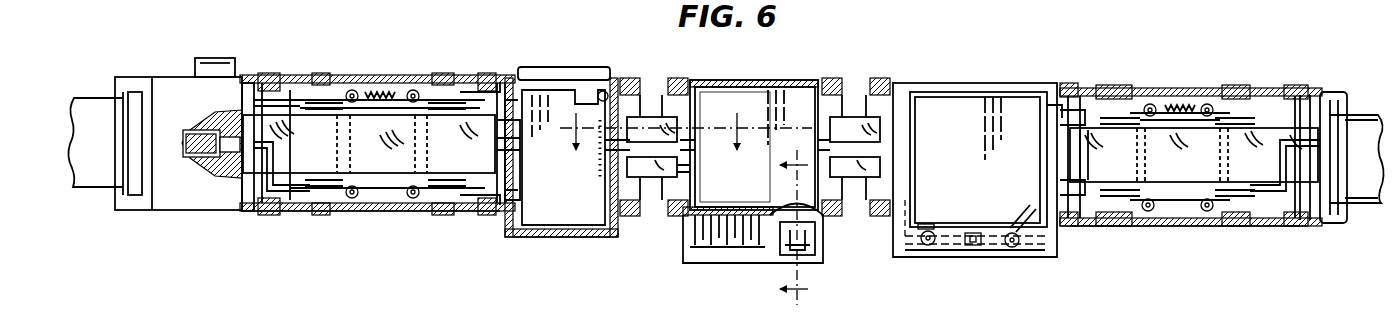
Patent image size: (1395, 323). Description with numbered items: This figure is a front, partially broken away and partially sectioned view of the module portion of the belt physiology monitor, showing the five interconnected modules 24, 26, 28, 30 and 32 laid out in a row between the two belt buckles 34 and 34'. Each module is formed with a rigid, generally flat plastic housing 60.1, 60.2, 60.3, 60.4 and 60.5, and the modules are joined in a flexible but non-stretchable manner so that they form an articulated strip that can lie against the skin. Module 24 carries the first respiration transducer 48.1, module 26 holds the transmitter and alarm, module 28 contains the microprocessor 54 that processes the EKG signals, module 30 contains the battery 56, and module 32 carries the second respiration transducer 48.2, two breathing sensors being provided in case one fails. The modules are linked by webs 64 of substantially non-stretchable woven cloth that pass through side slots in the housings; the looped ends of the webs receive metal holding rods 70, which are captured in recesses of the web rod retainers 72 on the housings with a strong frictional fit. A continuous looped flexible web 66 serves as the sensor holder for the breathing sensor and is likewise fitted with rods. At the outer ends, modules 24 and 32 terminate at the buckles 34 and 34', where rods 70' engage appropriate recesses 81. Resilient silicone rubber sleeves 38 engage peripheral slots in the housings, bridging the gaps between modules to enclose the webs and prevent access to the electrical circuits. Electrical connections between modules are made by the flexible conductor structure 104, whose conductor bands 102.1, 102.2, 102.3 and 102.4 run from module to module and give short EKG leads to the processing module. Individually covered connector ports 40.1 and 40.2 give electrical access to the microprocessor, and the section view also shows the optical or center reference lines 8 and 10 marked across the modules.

The optical axis 8 is at (686, 146).
The axis 10 is at (776, 227).
The module 24 is at (393, 70).
The module 26 is at (587, 67).
The module 28 is at (802, 73).
The module 30 is at (992, 78).
The module 32 is at (1182, 82).
The belt buckle 34 is at (155, 162).
The belt buckle 34' is at (1344, 119).
The sleeve 38 is at (475, 78).
The connector port 40.1 is at (717, 252).
The connector port 40.2 is at (752, 252).
The respiration transducer 48.1 is at (343, 100).
The respiration transducer 48.2 is at (1183, 200).
The microprocessor 54 is at (718, 103).
The battery 56 is at (955, 203).
The housing 60.1 is at (378, 213).
The housing 60.2 is at (560, 240).
The housing 60.3 is at (680, 233).
The housing 60.4 is at (1017, 260).
The housing 60.5 is at (1160, 227).
The web 64 is at (633, 163).
The web 66 is at (260, 167).
The holding rod 70 is at (1041, 164).
The rod 70' is at (777, 154).
The web rod retainer 72 is at (1067, 118).
The recess 81 is at (260, 83).
The conductor band 102.1 is at (467, 213).
The flexible band 102.2 is at (473, 100).
The flexible band 102.3 is at (696, 178).
The flexible band 102.4 is at (1045, 112).
The flexible conductor structure 104 is at (508, 220).